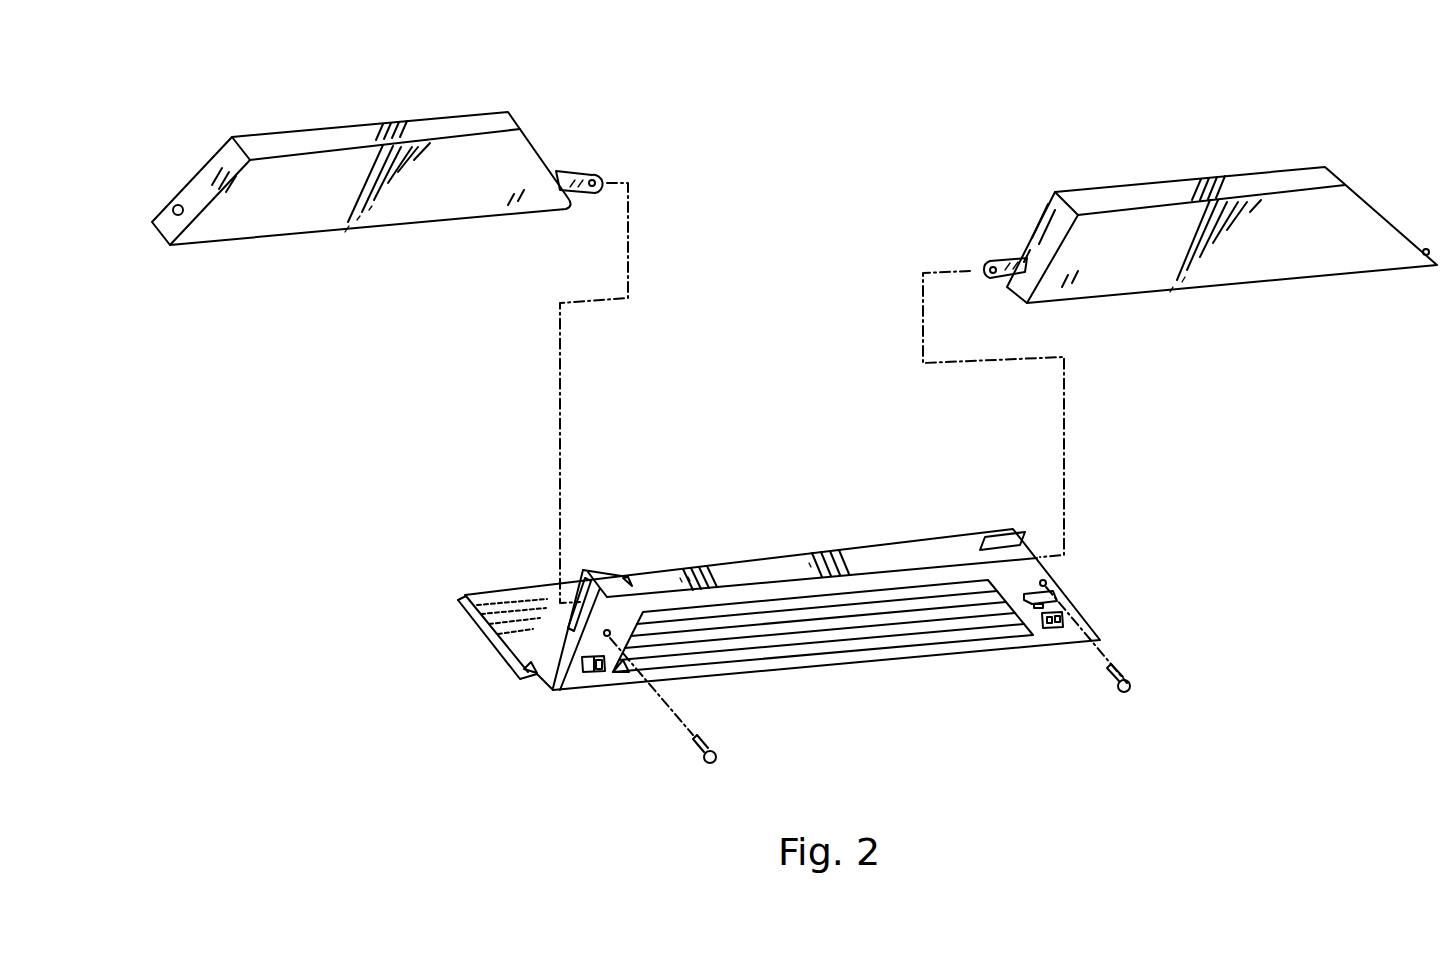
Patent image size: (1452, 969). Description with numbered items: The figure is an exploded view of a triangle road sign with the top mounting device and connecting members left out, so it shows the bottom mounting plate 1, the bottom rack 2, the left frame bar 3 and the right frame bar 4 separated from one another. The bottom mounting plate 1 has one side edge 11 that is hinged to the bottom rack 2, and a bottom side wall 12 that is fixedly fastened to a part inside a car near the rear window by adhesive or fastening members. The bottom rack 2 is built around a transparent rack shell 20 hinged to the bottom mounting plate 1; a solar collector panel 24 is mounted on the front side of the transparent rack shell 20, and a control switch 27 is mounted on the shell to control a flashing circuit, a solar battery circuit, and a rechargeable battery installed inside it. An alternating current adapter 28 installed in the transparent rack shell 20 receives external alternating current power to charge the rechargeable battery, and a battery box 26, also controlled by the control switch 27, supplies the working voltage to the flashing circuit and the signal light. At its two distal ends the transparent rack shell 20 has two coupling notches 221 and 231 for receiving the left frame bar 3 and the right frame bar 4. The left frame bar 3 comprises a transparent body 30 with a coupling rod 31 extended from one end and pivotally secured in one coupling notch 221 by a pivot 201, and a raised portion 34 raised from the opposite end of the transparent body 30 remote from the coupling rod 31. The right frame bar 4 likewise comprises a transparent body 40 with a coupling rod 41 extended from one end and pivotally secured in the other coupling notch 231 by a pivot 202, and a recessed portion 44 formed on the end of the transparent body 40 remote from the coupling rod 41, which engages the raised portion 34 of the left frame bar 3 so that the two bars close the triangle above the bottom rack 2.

The bottom mounting plate 1 is at (458, 582).
The bottom rack 2 is at (753, 548).
The left frame bar 3 is at (1225, 168).
The right frame bar 4 is at (378, 112).
The side edge 11 is at (528, 662).
The bottom side wall 12 is at (482, 633).
The transparent rack shell 20 is at (855, 582).
The solar collector panel 24 is at (793, 632).
The battery box 26 is at (1027, 598).
The control switch 27 is at (597, 670).
The alternating current adapter 28 is at (1052, 629).
The transparent body 30 is at (1137, 218).
The coupling rod 31 is at (993, 255).
The raised portion 34 is at (1426, 249).
The transparent body 40 is at (455, 148).
The coupling rod 41 is at (572, 170).
The recessed portion 44 is at (178, 204).
The pivot 201 is at (1113, 693).
The pivot 202 is at (697, 747).
The coupling notch 221 is at (1005, 545).
The coupling notch 231 is at (607, 580).